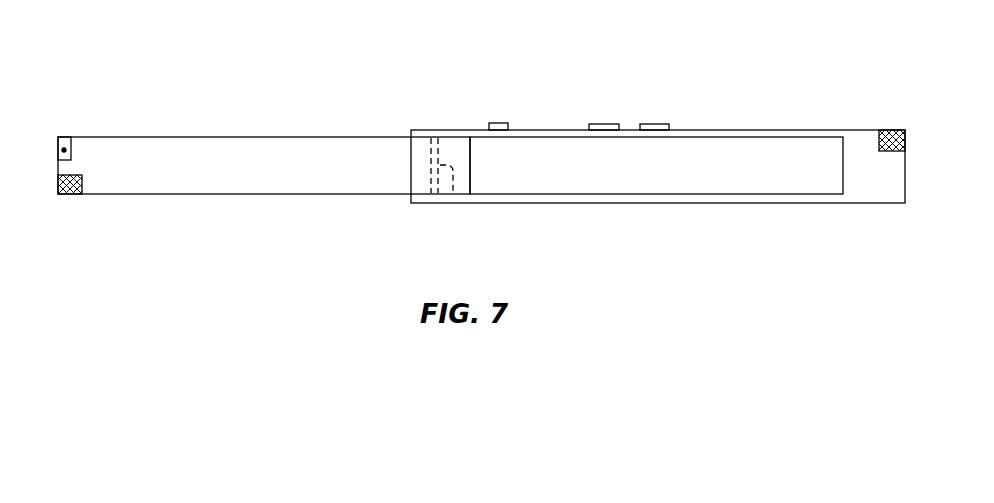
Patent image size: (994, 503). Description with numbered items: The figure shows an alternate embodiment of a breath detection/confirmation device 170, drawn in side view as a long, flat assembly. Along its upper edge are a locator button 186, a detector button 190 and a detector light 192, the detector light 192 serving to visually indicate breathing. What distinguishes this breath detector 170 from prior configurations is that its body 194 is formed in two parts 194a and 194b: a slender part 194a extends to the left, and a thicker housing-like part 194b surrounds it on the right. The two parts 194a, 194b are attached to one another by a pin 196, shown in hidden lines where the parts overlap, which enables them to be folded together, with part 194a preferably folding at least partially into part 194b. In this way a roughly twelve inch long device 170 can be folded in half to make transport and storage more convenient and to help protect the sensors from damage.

The breath detection/confirmation device 170 is at (447, 93).
The locator button 186 is at (606, 124).
The detector button 190 is at (668, 124).
The detector light 192 is at (508, 122).
The body 194 is at (347, 135).
The first body part 194a is at (230, 195).
The second body part 194b is at (565, 204).
The pin 196 is at (452, 203).